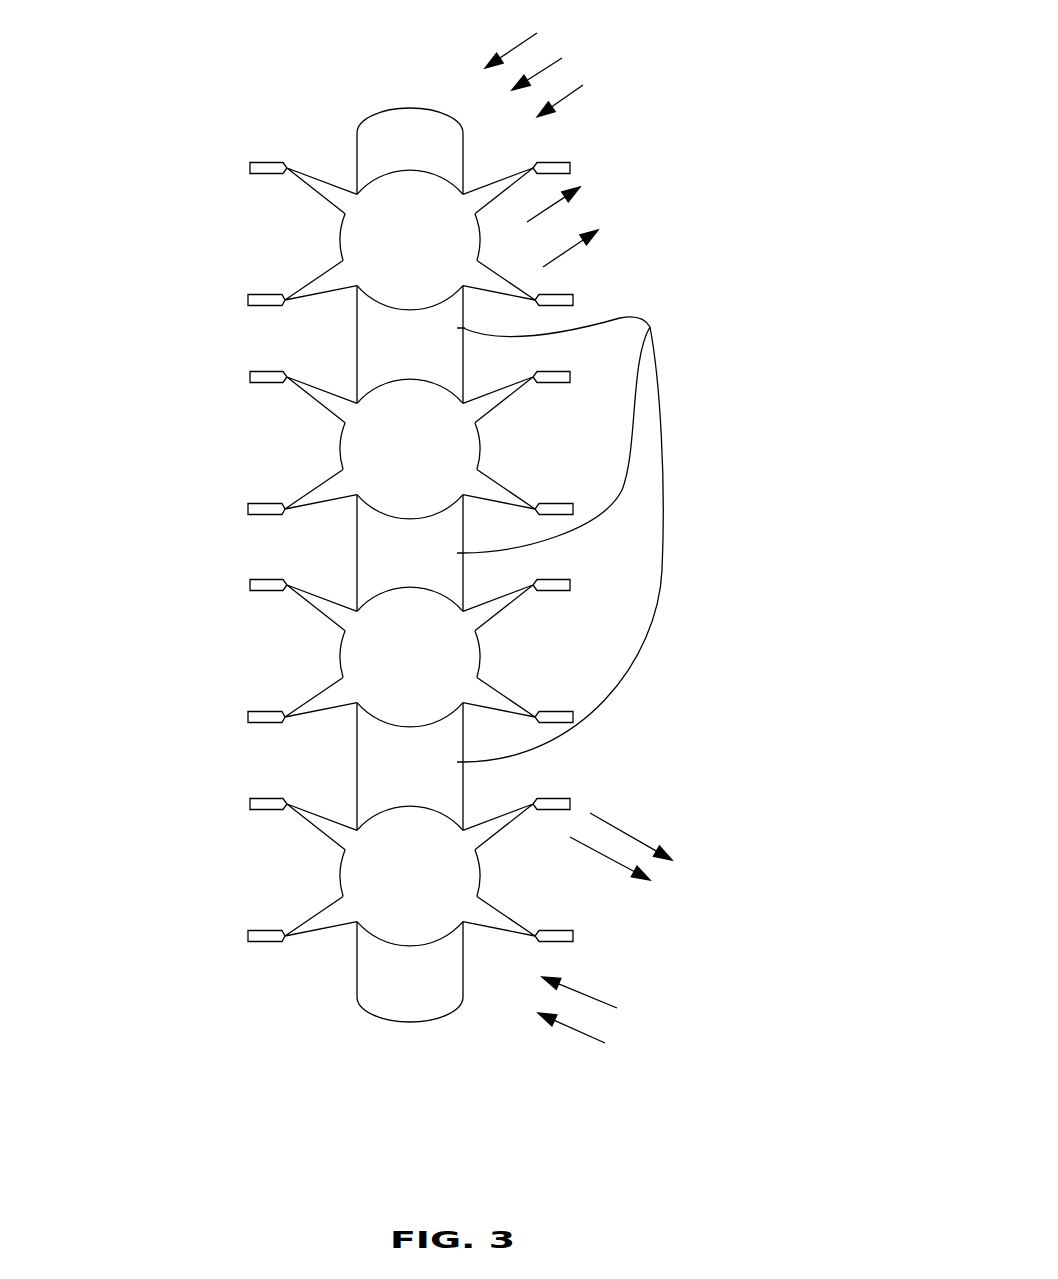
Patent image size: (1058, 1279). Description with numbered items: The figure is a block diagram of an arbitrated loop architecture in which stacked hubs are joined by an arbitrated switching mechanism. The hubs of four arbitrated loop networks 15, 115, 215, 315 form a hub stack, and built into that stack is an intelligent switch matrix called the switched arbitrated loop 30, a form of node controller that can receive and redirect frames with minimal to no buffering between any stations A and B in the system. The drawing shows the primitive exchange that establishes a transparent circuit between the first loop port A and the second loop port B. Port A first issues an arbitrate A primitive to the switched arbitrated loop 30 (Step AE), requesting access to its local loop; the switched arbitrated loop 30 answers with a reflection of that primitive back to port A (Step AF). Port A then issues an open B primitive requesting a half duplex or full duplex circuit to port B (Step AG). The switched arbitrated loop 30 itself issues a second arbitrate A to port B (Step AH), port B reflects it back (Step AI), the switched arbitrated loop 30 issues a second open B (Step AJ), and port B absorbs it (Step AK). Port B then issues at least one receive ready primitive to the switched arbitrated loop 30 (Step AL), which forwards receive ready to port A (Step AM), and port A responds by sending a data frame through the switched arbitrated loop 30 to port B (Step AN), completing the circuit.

The arbitrated loop network 15 is at (397, 224).
The arbitrated loop network 115 is at (341, 457).
The arbitrated loop network 215 is at (341, 657).
The arbitrated loop network 315 is at (416, 879).
The switched arbitrated loop 30 is at (678, 536).
The first loop port A is at (570, 168).
The second loop port B is at (575, 940).
The step of issuing first arbitrate A primitive signal AE is at (617, 25).
The step of issuing first open B primitive signal AG is at (645, 50).
The step of issuing data frame AN is at (675, 78).
The step of reflecting ARB A AF is at (780, 188).
The step of sending R_RDY to loop port A AM is at (693, 222).
The step of issuing second arbitrate A primitive signal AH is at (720, 847).
The step of issuing second open B primitive signal AJ is at (742, 890).
The step of absorbing second OPN B AK is at (857, 915).
The step of reflecting second ARB A AI is at (818, 1008).
The step of issuing receive ready primitive signal AL is at (700, 1042).